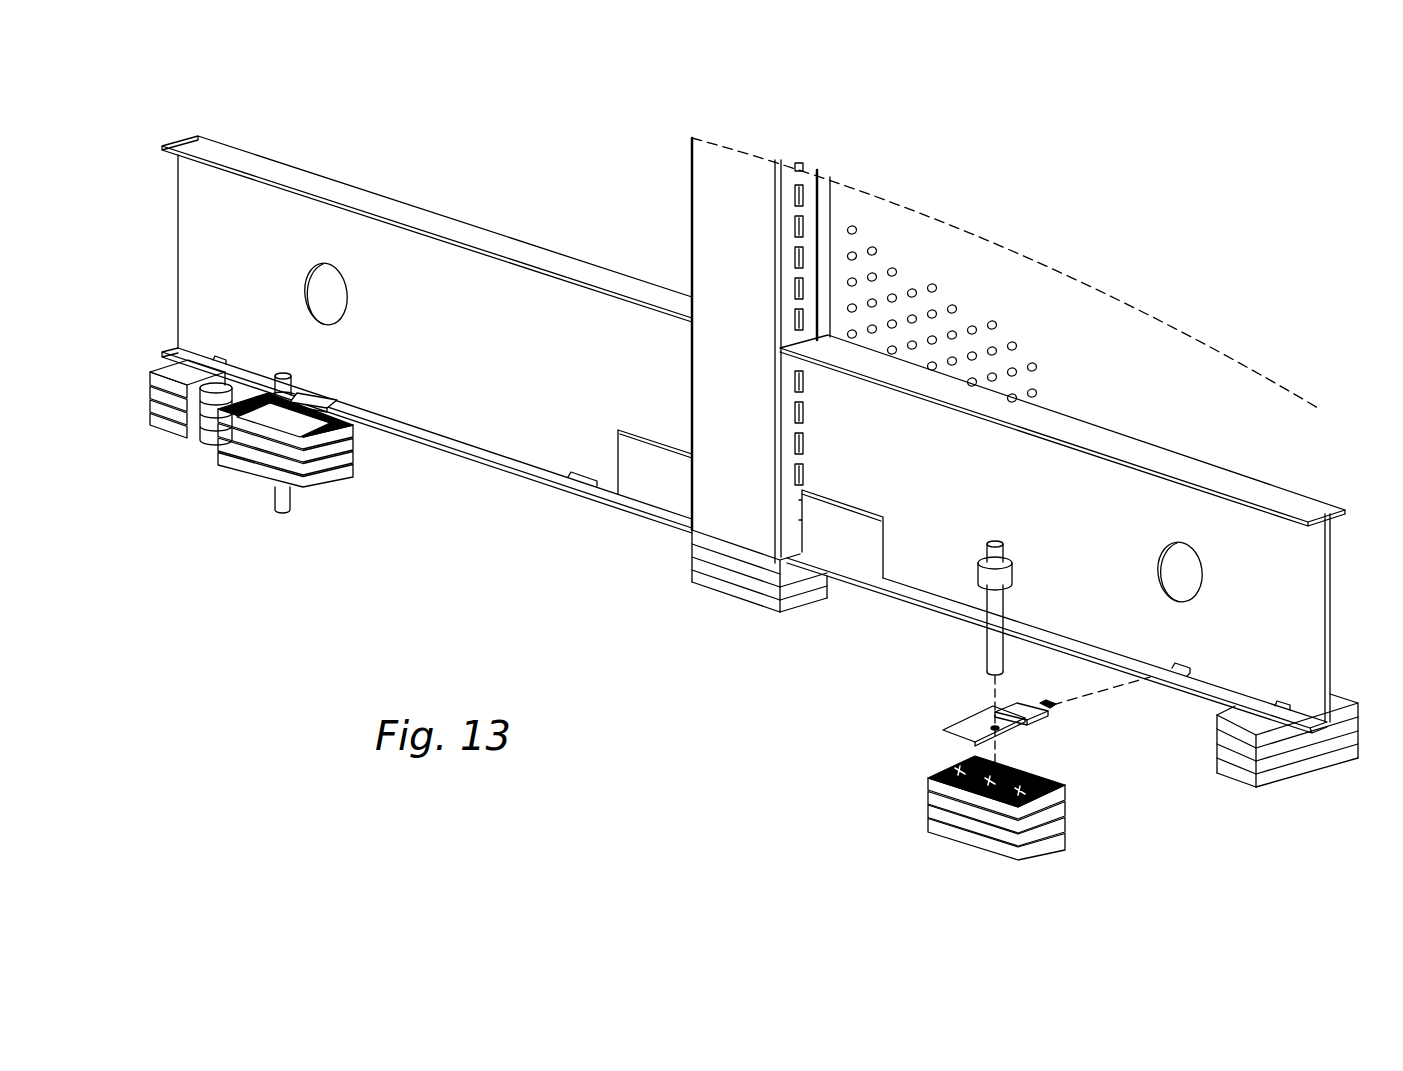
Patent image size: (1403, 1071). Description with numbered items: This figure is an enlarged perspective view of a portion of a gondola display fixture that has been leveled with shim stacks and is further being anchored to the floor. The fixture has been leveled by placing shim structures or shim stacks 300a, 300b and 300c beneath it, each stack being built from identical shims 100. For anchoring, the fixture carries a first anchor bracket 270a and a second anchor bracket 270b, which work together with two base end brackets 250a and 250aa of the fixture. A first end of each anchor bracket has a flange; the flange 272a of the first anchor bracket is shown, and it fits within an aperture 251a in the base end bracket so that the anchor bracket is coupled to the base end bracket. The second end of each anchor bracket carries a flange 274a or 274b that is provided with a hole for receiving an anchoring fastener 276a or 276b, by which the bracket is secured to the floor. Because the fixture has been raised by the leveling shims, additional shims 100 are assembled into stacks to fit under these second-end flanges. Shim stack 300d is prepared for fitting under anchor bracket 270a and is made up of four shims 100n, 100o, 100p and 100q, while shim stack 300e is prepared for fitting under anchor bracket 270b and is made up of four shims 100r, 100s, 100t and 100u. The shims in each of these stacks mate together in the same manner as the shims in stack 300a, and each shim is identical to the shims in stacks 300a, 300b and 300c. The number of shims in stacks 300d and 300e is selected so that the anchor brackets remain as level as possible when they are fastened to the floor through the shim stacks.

The shim 100 is at (1033, 813).
The shim 100n is at (1070, 790).
The shim 100o is at (1068, 812).
The shim 100p is at (1067, 827).
The shim 100q is at (1067, 840).
The shim 100r is at (355, 462).
The shim 100s is at (345, 475).
The shim 100t is at (330, 484).
The shim 100u is at (312, 489).
The base end bracket 250a is at (903, 440).
The base end bracket 250aa is at (475, 333).
The aperture 251a is at (1185, 670).
The anchor bracket 270a is at (1013, 712).
The anchor bracket 270b is at (312, 390).
The flange 272a is at (1047, 703).
The flange 274a is at (977, 732).
The flange 274b is at (258, 388).
The anchoring fastener 276a is at (985, 595).
The anchoring fastener 276b is at (284, 375).
The shim stack 300a is at (1313, 792).
The shim stack 300b is at (713, 617).
The shim stack 300c is at (178, 455).
The shim stack 300d is at (954, 813).
The shim stack 300e is at (305, 505).